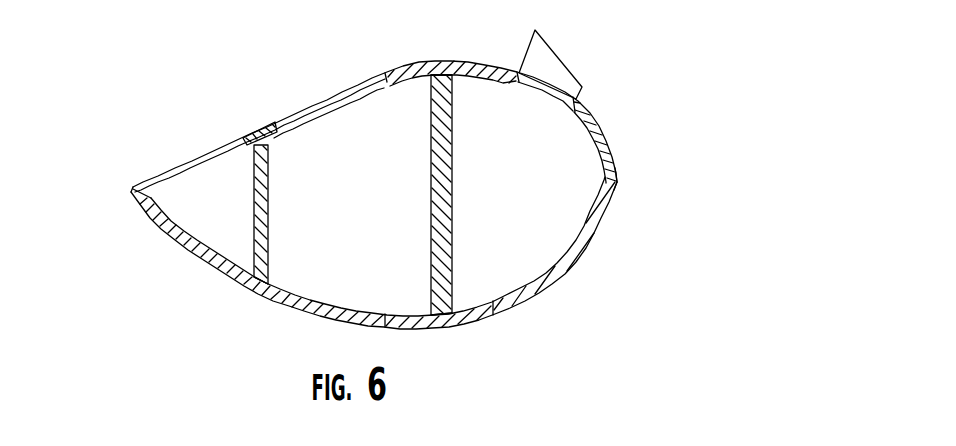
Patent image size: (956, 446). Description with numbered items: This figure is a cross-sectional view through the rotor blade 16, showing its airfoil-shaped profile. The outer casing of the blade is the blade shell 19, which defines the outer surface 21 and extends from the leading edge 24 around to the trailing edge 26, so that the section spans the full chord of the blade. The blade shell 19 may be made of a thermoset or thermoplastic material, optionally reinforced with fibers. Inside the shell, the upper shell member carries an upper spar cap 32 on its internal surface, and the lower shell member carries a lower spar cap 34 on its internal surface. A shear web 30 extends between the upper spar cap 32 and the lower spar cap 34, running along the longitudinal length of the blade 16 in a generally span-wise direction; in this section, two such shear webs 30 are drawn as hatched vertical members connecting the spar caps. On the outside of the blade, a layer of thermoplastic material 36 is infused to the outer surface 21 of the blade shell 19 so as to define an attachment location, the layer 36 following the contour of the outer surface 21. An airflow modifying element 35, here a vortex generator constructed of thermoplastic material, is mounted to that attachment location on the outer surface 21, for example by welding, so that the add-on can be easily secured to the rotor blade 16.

The rotor blade 16 is at (243, 70).
The blade shell 19 is at (327, 93).
The outer surface 21 is at (360, 82).
The leading edge 24 is at (623, 187).
The trailing edge 26 is at (132, 188).
The shear web 30 is at (268, 210).
The upper spar cap 32 is at (270, 136).
The lower spar cap 34 is at (270, 290).
The airflow modifying element 35 is at (566, 67).
The layer of thermoplastic material 36 is at (590, 103).